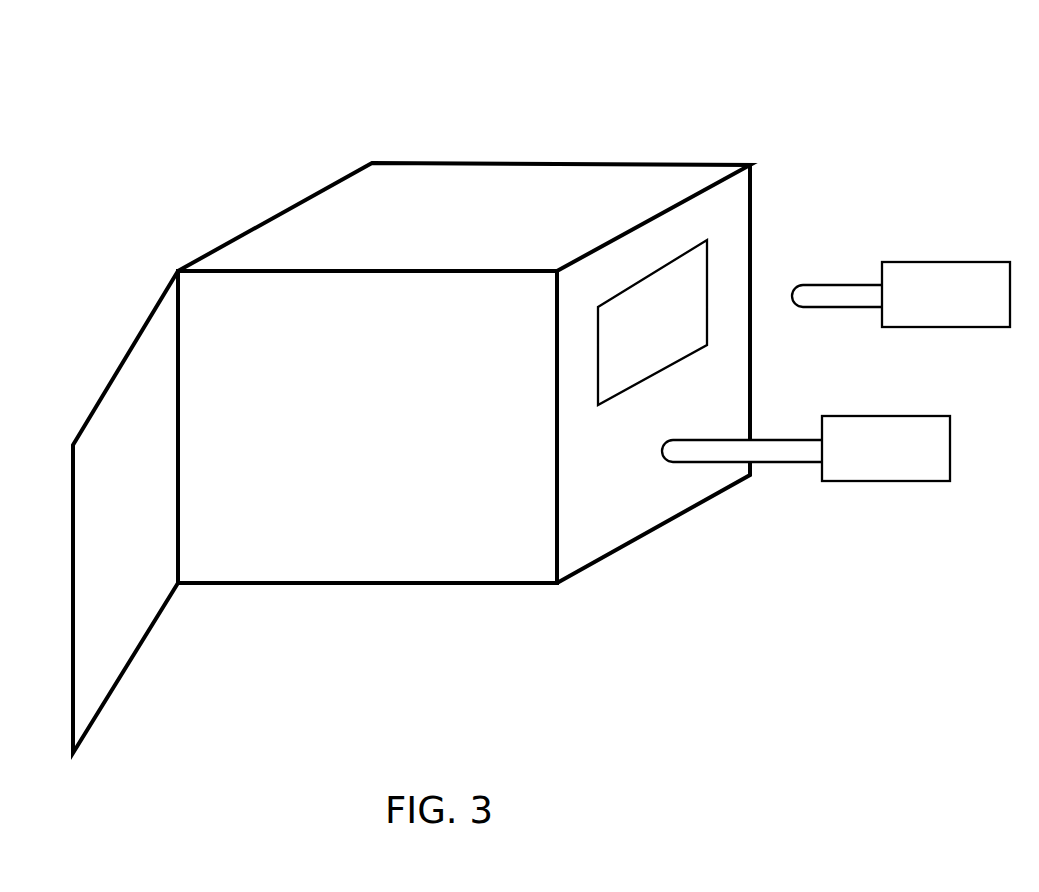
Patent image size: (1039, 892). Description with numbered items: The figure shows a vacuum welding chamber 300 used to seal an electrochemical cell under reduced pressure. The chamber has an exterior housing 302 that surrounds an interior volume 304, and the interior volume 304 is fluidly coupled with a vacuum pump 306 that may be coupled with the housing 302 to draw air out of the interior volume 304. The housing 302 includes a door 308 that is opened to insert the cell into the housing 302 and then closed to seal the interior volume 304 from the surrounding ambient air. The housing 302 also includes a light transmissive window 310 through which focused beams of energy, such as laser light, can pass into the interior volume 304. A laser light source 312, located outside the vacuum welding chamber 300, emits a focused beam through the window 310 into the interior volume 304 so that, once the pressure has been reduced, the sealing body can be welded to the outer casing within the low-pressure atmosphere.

The vacuum welding chamber 300 is at (820, 128).
The exterior housing 302 is at (275, 227).
The interior volume 304 is at (348, 427).
The vacuum pump 306 is at (883, 470).
The door 308 is at (123, 642).
The light transmissive window 310 is at (673, 348).
The laser light source 312 is at (938, 307).